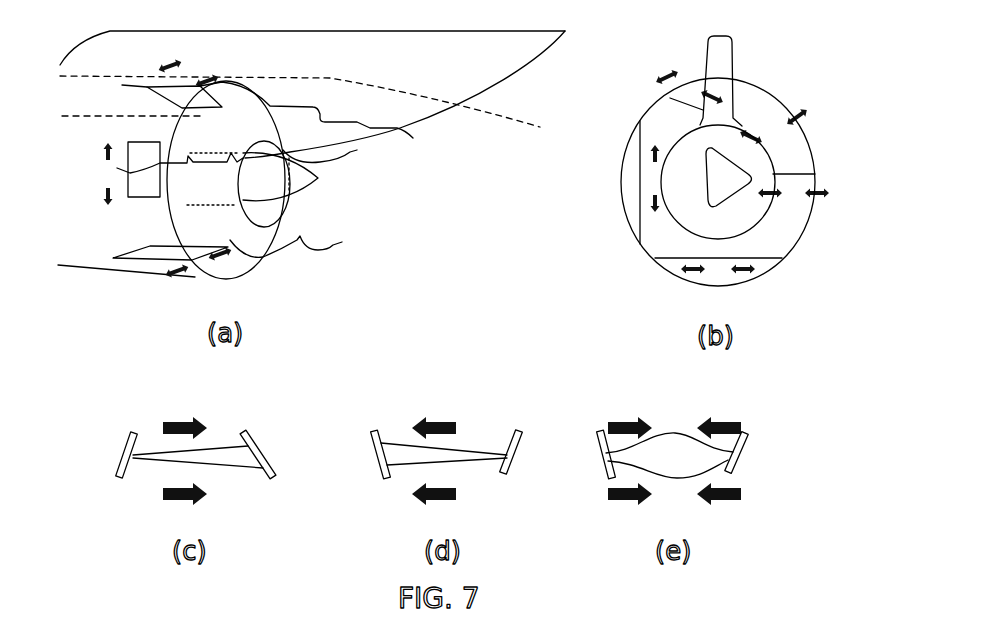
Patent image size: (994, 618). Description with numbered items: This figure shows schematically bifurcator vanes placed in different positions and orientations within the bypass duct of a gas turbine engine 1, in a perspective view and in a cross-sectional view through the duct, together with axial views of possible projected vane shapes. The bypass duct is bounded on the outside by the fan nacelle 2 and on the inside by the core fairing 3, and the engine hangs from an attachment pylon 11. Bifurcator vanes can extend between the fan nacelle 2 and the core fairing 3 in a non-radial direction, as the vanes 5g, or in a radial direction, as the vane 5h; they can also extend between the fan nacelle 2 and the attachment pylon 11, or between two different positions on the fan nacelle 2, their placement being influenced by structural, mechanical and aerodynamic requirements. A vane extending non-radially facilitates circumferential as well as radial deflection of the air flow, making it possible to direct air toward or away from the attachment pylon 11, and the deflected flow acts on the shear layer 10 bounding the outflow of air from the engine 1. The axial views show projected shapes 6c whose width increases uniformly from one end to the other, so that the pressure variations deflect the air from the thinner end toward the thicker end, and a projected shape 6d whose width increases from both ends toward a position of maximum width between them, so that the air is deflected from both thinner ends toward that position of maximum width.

The gas turbine engine 1 is at (129, 285).
The fan nacelle 2 is at (622, 177).
The core fairing 3 is at (762, 142).
The non-radial bifurcator vane 5g is at (210, 100).
The radial bifurcator vane 5h is at (798, 174).
The projected shape 6c is at (245, 485).
The projected shape 6d is at (690, 505).
The shear layer 10 is at (318, 247).
The attachment pylon 11 is at (437, 66).